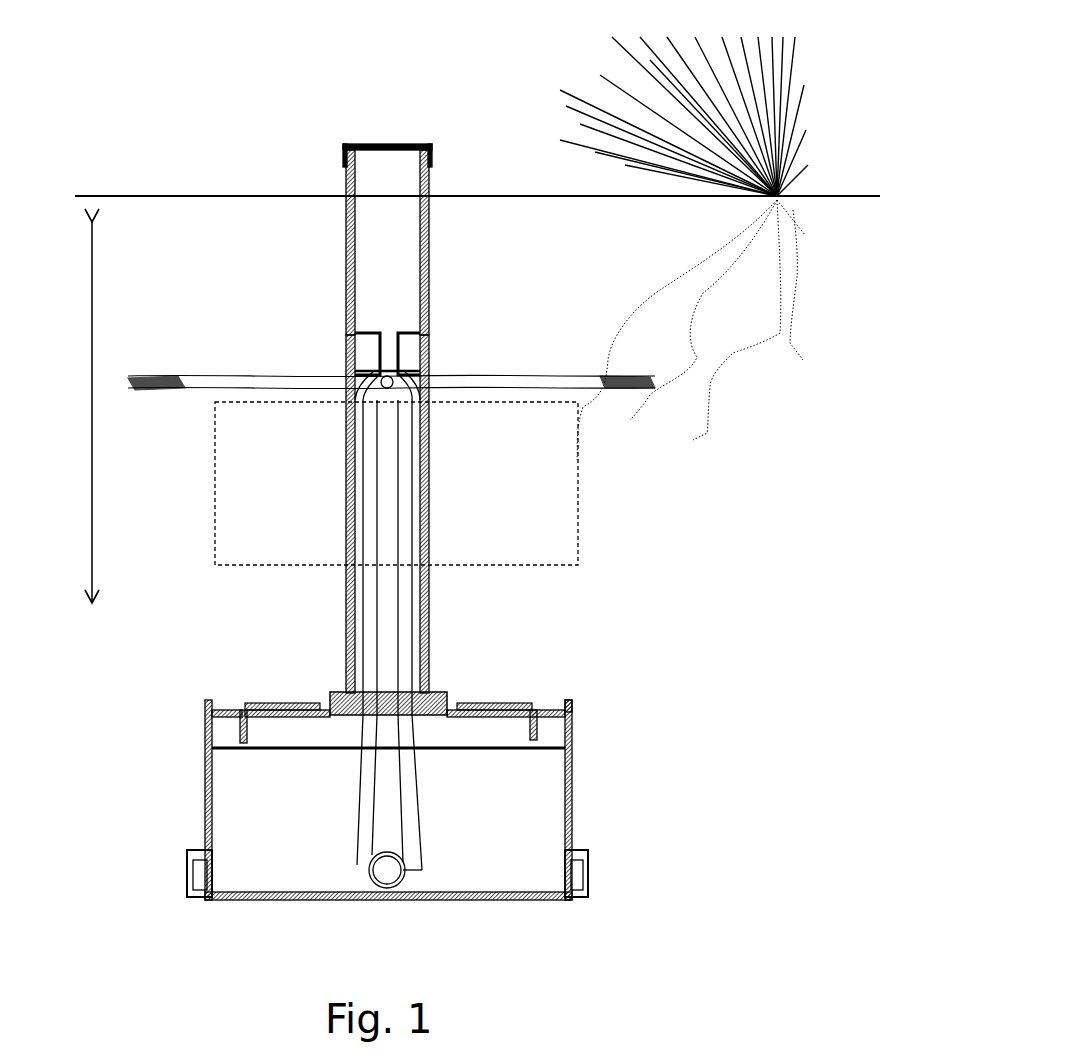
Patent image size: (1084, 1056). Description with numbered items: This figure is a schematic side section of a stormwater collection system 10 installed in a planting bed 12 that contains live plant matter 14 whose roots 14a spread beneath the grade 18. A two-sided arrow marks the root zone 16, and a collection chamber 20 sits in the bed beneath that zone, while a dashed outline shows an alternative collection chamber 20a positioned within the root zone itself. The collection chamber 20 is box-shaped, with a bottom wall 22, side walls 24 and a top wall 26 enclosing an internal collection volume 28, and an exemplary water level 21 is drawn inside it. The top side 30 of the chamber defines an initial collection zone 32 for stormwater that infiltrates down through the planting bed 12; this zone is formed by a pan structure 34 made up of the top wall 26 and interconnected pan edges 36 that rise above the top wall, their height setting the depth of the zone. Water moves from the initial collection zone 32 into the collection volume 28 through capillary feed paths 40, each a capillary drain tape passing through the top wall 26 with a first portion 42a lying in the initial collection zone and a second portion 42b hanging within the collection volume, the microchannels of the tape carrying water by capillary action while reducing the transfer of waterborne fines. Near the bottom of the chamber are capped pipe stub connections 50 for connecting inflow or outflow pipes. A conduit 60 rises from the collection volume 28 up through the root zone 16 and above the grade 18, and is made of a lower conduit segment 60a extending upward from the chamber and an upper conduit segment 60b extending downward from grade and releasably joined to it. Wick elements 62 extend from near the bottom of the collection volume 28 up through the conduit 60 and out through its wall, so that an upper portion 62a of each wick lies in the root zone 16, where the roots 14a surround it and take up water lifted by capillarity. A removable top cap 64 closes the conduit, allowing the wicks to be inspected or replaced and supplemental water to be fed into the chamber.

The stormwater collection system 10 is at (207, 86).
The planting bed 12 is at (226, 252).
The live plant matter 14 is at (567, 80).
The roots 14a is at (664, 283).
The root zone 16 is at (91, 386).
The grade 18 is at (120, 197).
The collection chamber 20 is at (371, 825).
The collection chamber 20a is at (579, 507).
The water level 21 is at (284, 750).
The bottom wall 22 is at (496, 900).
The side walls 24 is at (205, 770).
The top wall 26 is at (228, 710).
The internal collection volume 28 is at (262, 798).
The top side 30 is at (362, 707).
The initial collection zone 32 is at (258, 668).
The pan structure 34 is at (540, 723).
The pan edges 36 is at (571, 700).
The capillary feed paths 40 is at (515, 723).
The first portion 42a is at (488, 706).
The second portion 42b is at (533, 742).
The capped pipe stub connections 50 is at (190, 900).
The conduit 60 is at (340, 354).
The lower conduit segment 60a is at (429, 605).
The upper conduit segment 60b is at (429, 248).
The wick element 62 is at (362, 479).
The upper portion 62a is at (216, 377).
The removable top cap 64 is at (345, 146).